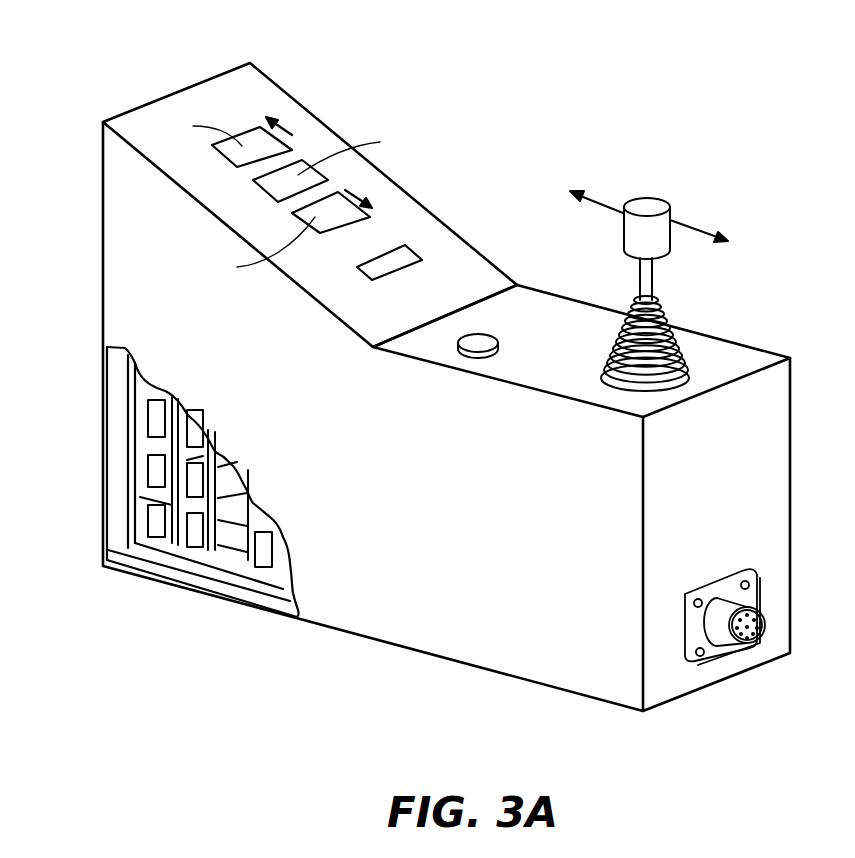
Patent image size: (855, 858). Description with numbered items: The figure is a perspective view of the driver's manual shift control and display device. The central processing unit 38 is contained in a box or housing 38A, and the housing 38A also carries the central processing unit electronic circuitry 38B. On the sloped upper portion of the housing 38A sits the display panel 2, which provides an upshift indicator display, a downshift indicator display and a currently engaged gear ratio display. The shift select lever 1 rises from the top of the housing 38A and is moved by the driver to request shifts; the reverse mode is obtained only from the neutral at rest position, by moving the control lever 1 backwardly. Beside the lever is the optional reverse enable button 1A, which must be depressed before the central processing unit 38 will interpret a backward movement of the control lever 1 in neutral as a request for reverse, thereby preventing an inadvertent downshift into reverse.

The shift select lever 1 is at (650, 205).
The reverse enable button 1A is at (478, 348).
The display panel 2 is at (240, 100).
The central processing unit 38 is at (112, 409).
The housing 38A is at (460, 638).
The central processing unit electronic circuitry 38B is at (153, 473).